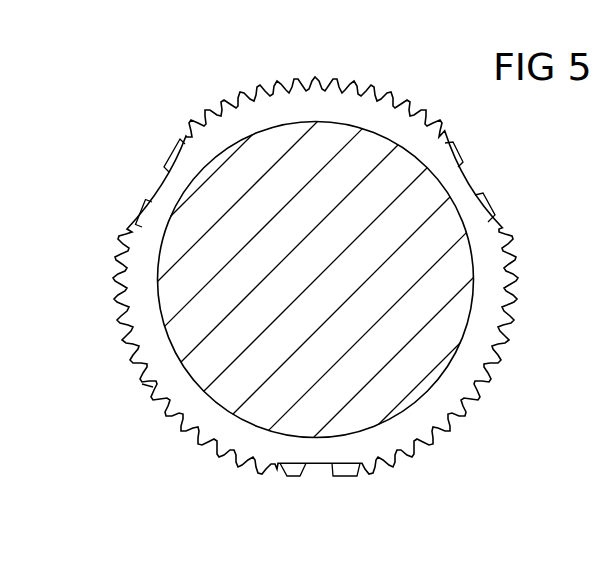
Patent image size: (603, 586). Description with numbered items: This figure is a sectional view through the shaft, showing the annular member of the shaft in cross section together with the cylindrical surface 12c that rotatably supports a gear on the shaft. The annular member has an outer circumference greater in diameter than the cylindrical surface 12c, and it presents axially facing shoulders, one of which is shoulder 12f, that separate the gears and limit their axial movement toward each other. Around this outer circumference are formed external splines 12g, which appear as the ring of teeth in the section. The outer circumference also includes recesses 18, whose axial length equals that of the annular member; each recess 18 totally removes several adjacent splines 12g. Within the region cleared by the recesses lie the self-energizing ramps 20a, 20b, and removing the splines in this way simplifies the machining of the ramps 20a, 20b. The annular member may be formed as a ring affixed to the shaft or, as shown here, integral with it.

The recesses 18 is at (481, 177).
The cylindrical surface 12c is at (385, 133).
The shoulder 12f is at (233, 121).
The external splines 12g is at (142, 385).
The self-energizing ramp 20a is at (336, 476).
The self-energizing ramp 20b is at (285, 476).